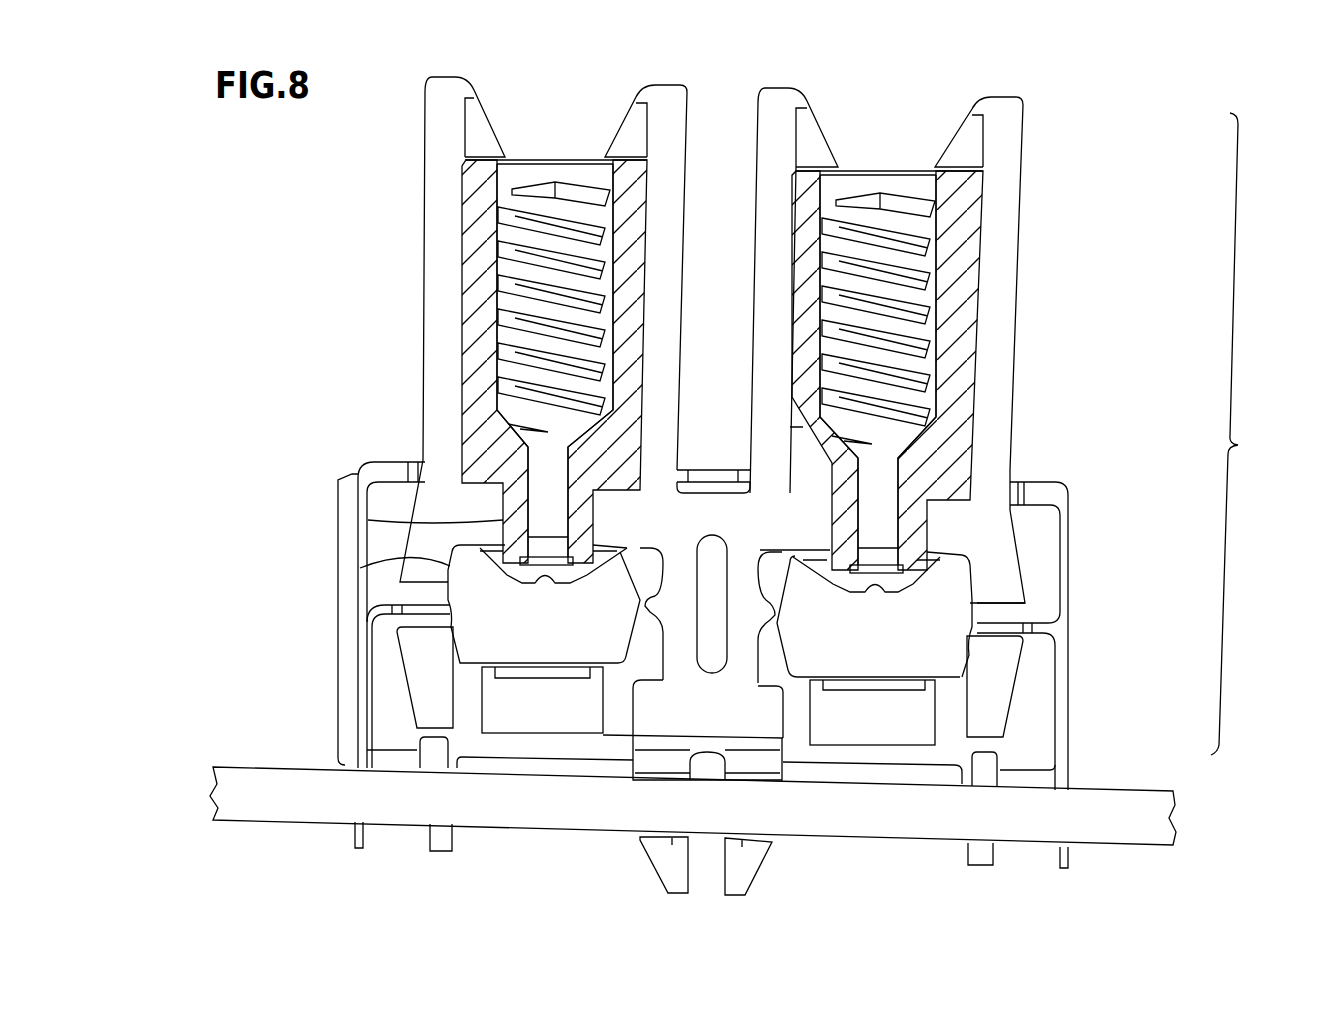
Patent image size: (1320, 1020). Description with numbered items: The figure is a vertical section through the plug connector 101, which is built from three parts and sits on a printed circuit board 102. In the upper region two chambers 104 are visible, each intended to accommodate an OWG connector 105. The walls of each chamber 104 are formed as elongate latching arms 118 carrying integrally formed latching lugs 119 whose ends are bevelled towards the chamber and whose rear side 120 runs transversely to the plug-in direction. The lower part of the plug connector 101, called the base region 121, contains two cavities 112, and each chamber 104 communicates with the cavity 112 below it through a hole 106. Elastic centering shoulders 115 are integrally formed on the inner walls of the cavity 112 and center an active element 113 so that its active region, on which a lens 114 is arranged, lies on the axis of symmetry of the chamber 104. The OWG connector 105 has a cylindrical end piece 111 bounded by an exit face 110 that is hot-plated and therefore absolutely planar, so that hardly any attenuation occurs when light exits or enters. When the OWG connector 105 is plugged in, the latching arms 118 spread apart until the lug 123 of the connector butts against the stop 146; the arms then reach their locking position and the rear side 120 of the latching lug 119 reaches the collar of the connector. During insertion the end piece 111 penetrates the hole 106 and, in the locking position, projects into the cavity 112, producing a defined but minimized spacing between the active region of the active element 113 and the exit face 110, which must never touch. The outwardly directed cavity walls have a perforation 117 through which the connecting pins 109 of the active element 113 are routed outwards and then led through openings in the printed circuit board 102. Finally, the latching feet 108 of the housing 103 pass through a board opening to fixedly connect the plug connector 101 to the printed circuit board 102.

The plug connector 101 is at (1251, 434).
The printed circuit board 102 is at (298, 785).
The housing 103 is at (400, 258).
The chamber 104 is at (911, 138).
The OWG connector 105 is at (462, 187).
The hole 106 is at (488, 509).
The latching foot 108 is at (653, 870).
The connecting pin 109 is at (1069, 698).
The exit face 110 is at (960, 575).
The end piece 111 is at (1010, 413).
The cavity 112 is at (421, 595).
The active element 113 is at (495, 637).
The lens 114 is at (358, 522).
The centering shoulder 115 is at (362, 568).
The perforation 117 is at (1027, 615).
The latching arm 118 is at (993, 188).
The latching lug 119 is at (822, 158).
The rear side of the latching lug 120 is at (958, 170).
The base region 121 is at (338, 620).
The lug 123 is at (482, 444).
The stop 146 is at (1010, 413).